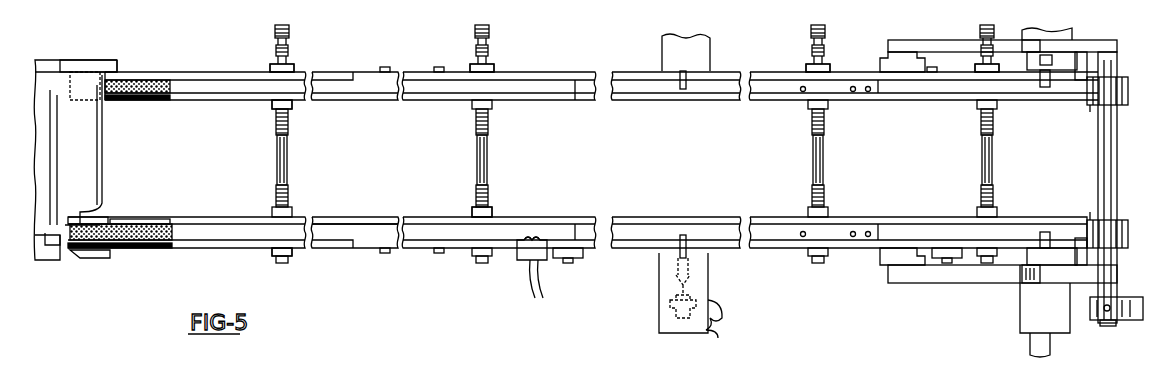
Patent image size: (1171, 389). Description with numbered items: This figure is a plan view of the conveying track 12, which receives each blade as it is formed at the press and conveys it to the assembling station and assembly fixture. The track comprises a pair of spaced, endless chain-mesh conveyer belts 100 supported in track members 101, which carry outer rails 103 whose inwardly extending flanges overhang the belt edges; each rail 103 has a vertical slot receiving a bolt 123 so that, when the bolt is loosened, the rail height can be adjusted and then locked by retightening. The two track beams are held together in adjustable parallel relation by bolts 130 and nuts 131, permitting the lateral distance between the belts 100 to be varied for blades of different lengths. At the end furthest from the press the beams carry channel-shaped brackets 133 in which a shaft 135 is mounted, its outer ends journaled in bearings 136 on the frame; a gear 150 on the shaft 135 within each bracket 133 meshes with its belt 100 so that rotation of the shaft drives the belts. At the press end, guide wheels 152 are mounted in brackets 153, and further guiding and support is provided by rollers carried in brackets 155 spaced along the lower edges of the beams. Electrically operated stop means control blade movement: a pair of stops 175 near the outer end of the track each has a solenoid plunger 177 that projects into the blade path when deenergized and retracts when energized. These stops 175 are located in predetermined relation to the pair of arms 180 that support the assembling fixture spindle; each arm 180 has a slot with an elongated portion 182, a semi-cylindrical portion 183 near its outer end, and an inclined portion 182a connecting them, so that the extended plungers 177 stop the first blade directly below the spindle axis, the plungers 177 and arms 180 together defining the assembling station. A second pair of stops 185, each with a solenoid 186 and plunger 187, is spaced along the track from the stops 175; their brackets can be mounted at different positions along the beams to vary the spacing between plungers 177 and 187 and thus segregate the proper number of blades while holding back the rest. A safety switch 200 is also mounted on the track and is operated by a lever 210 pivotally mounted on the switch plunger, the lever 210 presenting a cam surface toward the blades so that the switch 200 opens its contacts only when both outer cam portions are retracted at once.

The track 12 is at (417, 276).
The conveyer belts 100 is at (160, 72).
The track members 101 is at (338, 236).
The outer rails 103 is at (228, 249).
The bolt 123 is at (439, 253).
The bolts 130 is at (286, 156).
The nuts 131 is at (296, 68).
The brackets 133 is at (1088, 106).
The shaft 135 is at (1104, 176).
The bearings 136 is at (1094, 322).
The gear 150 is at (1097, 106).
The guide wheels 152 is at (70, 250).
The brackets 153 is at (128, 101).
The brackets 155 is at (578, 262).
The stops 175 is at (1035, 33).
The plunger 177 is at (1045, 86).
The arms 180 is at (900, 40).
The elongated portion 182 is at (1050, 268).
The inclined portion 182a is at (1040, 62).
The semi-cylindrical portion 183 is at (1040, 68).
The stops 185 is at (650, 40).
The solenoid 186 is at (668, 313).
The plunger 187 is at (683, 90).
The safety switch 200 is at (520, 252).
The lever 210 is at (536, 240).